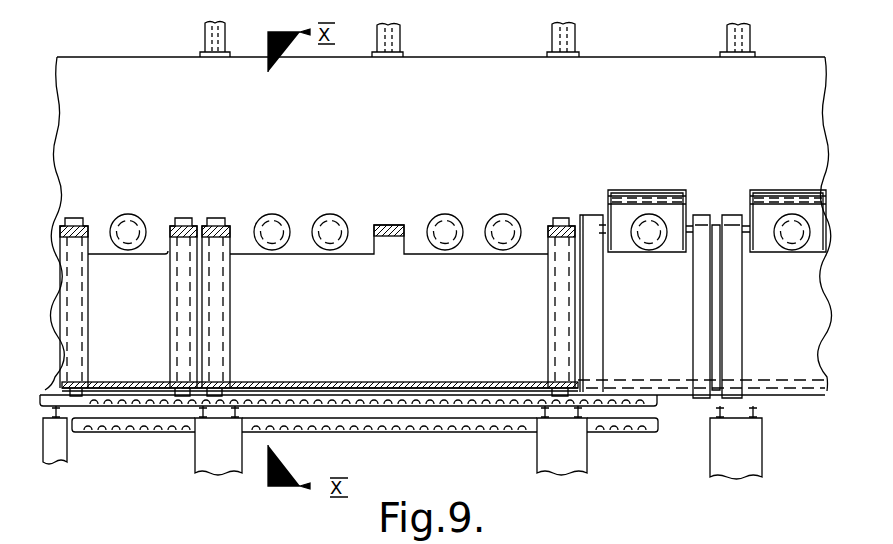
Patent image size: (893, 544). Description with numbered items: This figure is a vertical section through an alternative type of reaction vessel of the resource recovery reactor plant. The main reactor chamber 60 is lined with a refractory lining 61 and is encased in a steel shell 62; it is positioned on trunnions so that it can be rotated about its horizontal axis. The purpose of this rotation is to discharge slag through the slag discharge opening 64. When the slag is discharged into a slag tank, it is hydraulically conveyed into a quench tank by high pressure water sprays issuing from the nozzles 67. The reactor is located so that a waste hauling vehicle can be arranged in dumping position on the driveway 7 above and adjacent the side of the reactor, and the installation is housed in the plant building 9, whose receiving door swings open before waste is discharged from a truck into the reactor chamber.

The driveway 7 is at (640, 57).
The plant building 9 is at (548, 40).
The main reactor chamber 60 is at (372, 321).
The refractory lining 61 is at (413, 383).
The steel shell 62 is at (443, 392).
The slag discharge opening 64 is at (152, 252).
The nozzles 67 is at (410, 429).